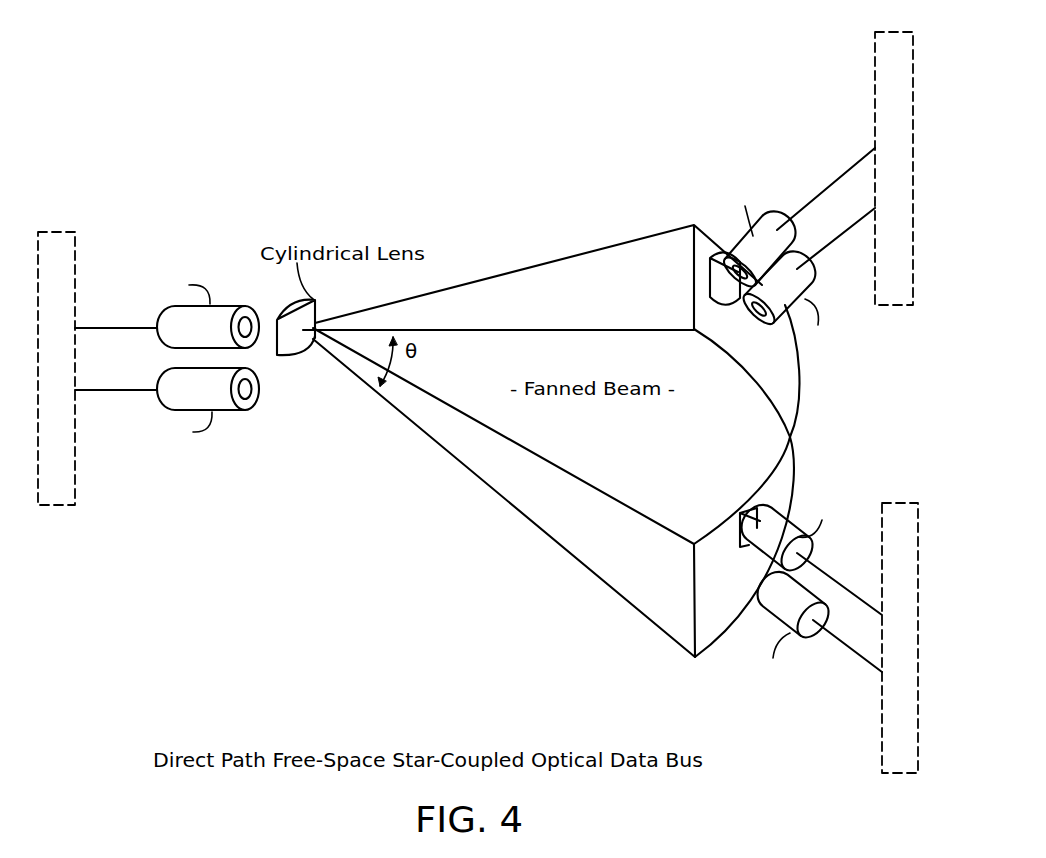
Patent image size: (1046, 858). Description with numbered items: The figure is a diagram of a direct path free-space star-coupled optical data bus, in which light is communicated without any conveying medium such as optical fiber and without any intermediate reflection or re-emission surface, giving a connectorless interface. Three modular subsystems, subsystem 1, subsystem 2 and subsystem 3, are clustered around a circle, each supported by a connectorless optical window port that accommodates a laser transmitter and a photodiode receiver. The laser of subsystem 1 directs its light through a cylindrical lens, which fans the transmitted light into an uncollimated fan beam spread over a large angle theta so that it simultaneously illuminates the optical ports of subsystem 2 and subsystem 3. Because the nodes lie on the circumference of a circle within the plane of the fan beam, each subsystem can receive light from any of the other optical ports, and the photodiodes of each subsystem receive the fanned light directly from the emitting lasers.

The Subsystem 1 (with Port 1 laser and photodiode) 1 is at (148, 368).
The Subsystem 2 (with Port 2 laser and photodiode) 2 is at (813, 199).
The Subsystem 3 (with Port 3 laser and photodiode) 3 is at (910, 772).